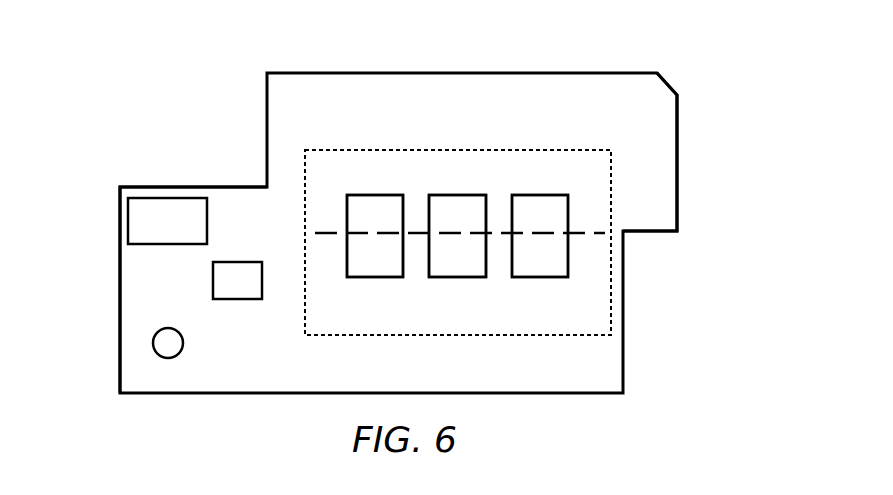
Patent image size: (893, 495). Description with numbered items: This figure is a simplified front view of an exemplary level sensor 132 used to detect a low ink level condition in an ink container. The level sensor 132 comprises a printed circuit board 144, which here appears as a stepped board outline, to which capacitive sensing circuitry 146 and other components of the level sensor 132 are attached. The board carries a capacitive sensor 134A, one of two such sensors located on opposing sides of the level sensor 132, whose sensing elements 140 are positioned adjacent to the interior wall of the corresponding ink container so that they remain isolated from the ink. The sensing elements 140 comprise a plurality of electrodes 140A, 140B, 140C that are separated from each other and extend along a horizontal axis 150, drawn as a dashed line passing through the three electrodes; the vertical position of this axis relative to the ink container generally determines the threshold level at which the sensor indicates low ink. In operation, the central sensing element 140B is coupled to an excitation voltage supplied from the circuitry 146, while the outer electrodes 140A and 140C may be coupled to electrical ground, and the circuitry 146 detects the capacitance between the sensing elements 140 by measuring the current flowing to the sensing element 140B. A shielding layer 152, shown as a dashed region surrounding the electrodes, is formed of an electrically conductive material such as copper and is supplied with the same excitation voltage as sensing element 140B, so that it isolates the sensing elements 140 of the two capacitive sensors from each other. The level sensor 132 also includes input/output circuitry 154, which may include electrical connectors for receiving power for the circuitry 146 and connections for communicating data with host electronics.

The level sensor 132 is at (168, 66).
The capacitive sensor 134A is at (648, 183).
The printed circuit board 144 is at (138, 307).
The input/output circuitry 154 is at (143, 230).
The capacitive sensing circuitry 146 is at (238, 288).
The shielding layer 152 is at (463, 158).
The sensing elements 140 is at (592, 312).
The electrode 140A is at (370, 270).
The central sensing element 140B is at (448, 207).
The electrode 140C is at (543, 270).
The horizontal axis 150 is at (593, 236).